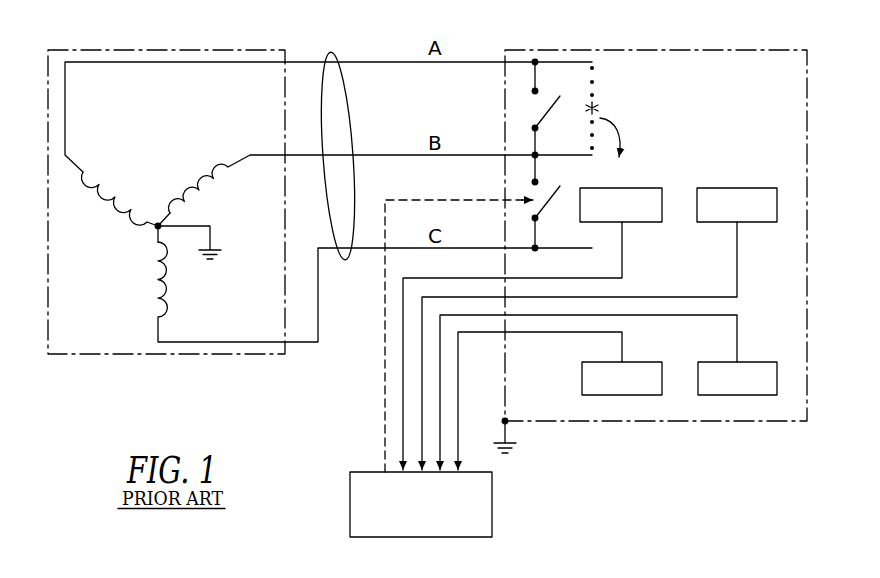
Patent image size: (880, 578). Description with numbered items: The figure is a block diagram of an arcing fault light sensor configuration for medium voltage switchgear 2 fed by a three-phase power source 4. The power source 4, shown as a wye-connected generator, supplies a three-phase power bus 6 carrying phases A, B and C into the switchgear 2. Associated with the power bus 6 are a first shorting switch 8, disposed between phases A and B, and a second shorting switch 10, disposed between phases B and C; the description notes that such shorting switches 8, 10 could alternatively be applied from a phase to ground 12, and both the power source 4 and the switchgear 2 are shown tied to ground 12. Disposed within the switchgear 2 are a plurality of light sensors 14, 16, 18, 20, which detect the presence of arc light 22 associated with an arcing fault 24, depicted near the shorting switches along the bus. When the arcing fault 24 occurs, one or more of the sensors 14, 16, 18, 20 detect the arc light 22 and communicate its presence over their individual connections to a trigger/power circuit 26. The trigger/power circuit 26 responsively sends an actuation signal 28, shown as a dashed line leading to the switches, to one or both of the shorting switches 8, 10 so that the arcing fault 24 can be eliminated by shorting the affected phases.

The switchgear 2 is at (673, 423).
The three-phase power source 4 is at (132, 356).
The three-phase power bus 6 is at (335, 52).
The first shorting switch 8 is at (549, 110).
The second shorting switch 10 is at (546, 197).
The ground 12 is at (222, 254).
The light sensor 14 is at (638, 188).
The light sensor 16 is at (755, 188).
The light sensor 18 is at (641, 362).
The light sensor 20 is at (757, 362).
The arc light 22 is at (626, 128).
The arcing fault 24 is at (600, 106).
The trigger/power circuit 26 is at (360, 472).
The actuation signal 28 is at (427, 200).